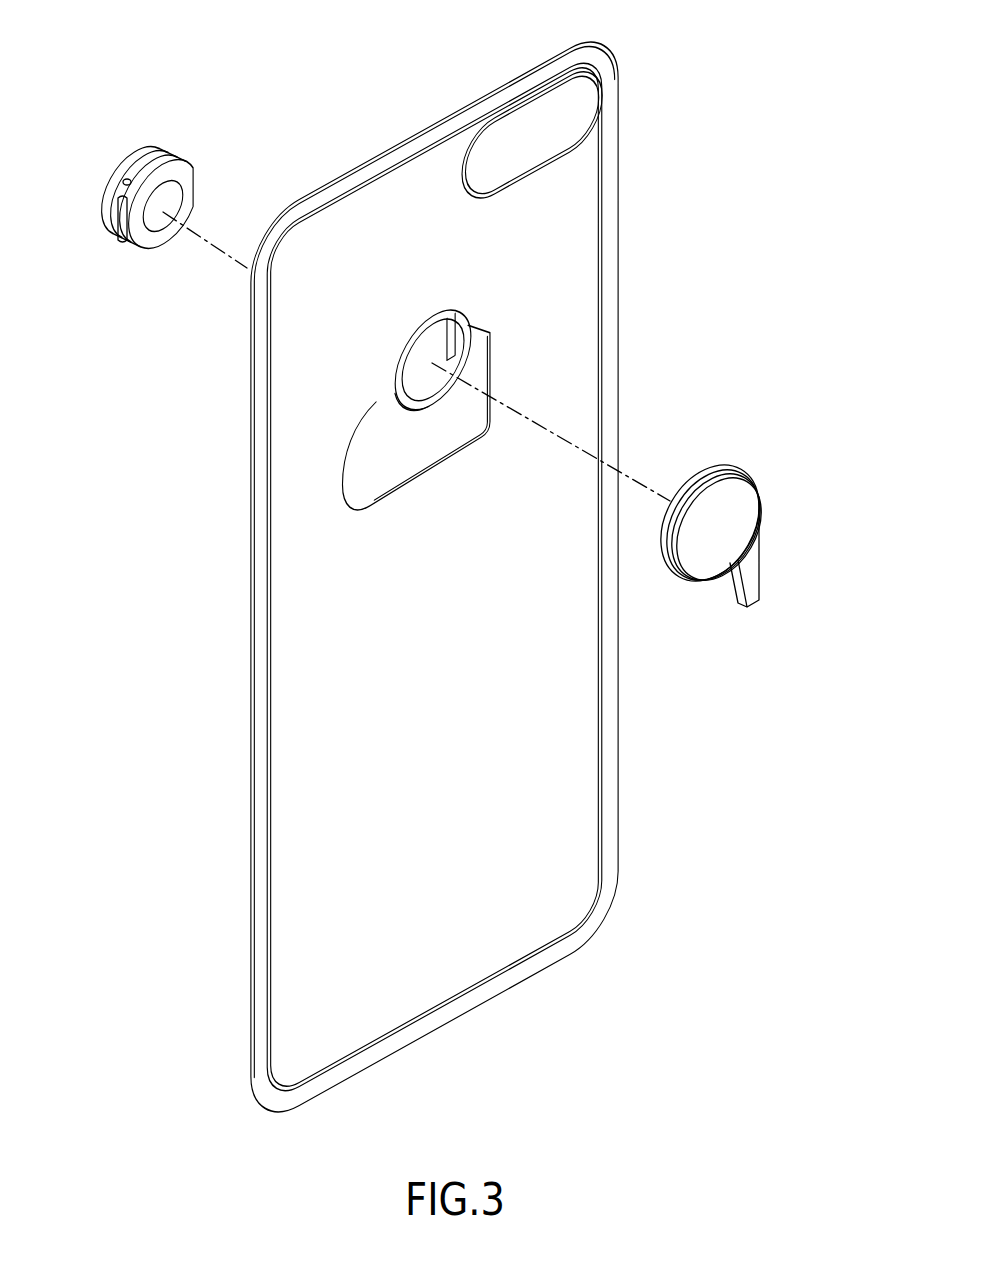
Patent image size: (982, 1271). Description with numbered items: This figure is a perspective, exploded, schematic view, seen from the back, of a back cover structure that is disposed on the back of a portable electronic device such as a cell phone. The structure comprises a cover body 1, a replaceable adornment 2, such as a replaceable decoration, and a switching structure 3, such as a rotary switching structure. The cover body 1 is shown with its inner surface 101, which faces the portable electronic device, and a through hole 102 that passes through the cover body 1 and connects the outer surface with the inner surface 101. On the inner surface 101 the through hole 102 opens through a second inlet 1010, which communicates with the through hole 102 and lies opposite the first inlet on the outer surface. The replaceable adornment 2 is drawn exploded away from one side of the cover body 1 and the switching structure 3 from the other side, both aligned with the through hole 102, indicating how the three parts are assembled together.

The cover body 1 is at (418, 124).
The inner surface 101 is at (308, 681).
The through hole 102 is at (430, 344).
The second inlet 1010 is at (435, 405).
The replaceable adornment 2 is at (182, 134).
The switching structure 3 is at (750, 450).